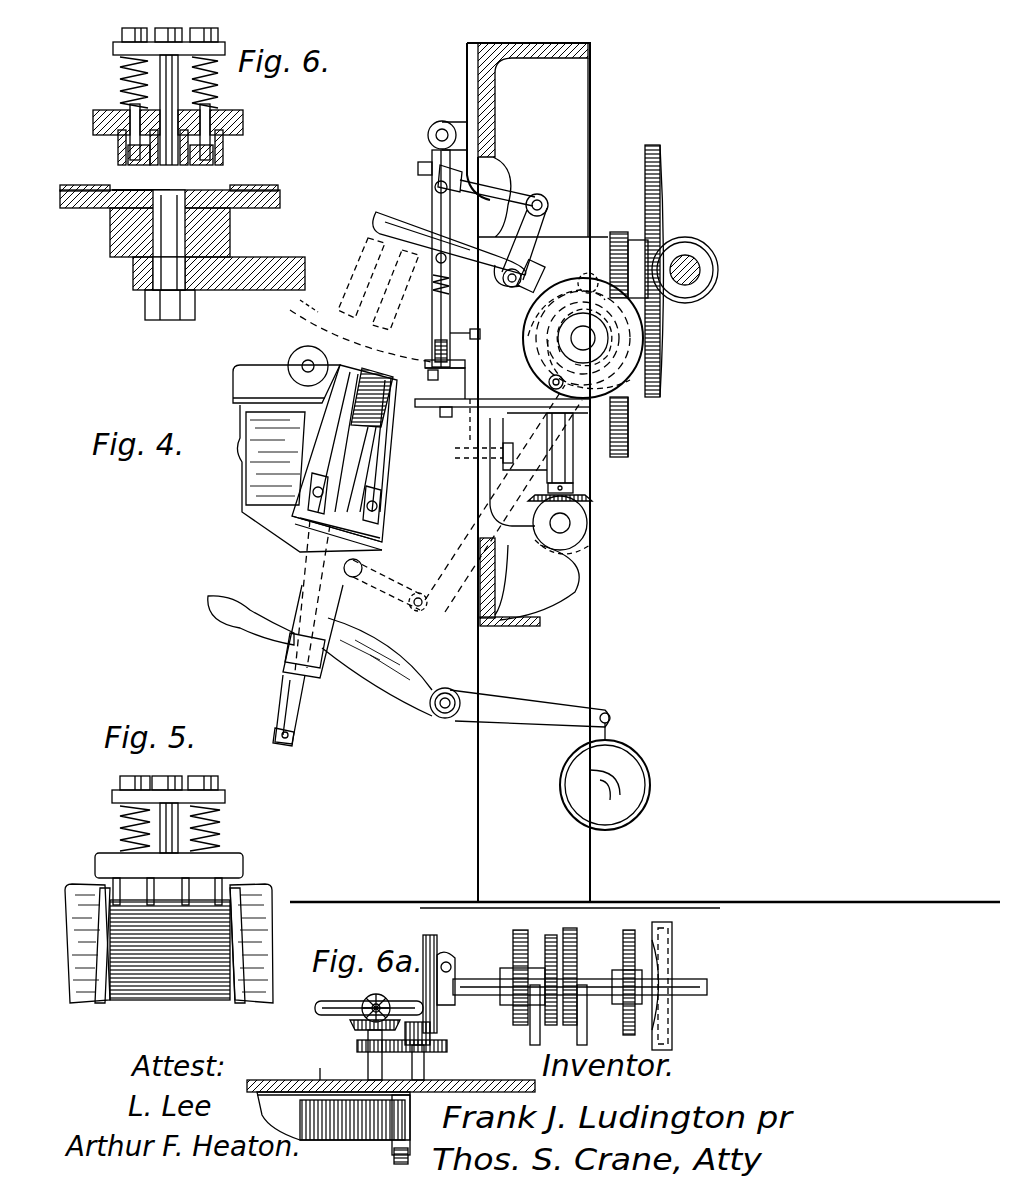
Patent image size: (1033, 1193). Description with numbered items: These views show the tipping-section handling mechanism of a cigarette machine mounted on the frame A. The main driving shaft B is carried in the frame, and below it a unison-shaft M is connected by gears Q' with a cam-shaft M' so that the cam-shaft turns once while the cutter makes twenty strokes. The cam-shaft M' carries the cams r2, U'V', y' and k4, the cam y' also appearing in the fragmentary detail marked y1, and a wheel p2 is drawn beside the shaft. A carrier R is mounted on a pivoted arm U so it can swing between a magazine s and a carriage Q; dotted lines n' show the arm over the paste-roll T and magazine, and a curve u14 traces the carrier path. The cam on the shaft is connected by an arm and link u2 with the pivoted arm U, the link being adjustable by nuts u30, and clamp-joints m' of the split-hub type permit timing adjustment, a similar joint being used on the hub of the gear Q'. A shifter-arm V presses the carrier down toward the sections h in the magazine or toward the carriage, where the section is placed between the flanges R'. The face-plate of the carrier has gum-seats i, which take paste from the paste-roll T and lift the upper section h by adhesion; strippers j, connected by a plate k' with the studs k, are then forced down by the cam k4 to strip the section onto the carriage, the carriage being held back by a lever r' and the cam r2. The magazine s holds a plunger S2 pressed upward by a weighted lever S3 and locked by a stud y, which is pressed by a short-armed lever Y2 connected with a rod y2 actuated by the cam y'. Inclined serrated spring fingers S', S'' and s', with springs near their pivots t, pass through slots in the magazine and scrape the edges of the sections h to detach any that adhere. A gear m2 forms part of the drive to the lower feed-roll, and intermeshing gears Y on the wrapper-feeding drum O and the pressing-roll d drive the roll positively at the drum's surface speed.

In FIG. 6, the plate k' is at (145, 37).
In FIG. 5, the plate k' is at (194, 789).
In FIG. 6, the spring bolts k is at (191, 110).
In FIG. 6, the strippers j is at (215, 160).
In FIG. 6, the gum-seats i is at (122, 162).
In FIG. 5, the gum-seats i is at (225, 885).
In FIG. 6, the sections of tipping material h is at (135, 192).
In FIG. 4, the sections of tipping material h is at (385, 357).
In FIG. 5, the sections of tipping material h is at (145, 990).
In FIG. 6, the flanges R' is at (183, 180).
In FIG. 4, the flanges R' is at (410, 337).
In FIG. 6, the carriage Q is at (137, 240).
In FIG. 4, the carriage Q is at (497, 401).
In FIG. 6, the base plate r' is at (219, 274).
In FIG. 4, the base plate r' is at (456, 428).
In FIG. 4, the pivoted arm U is at (414, 244).
In FIG. 4, the nuts u30 is at (425, 165).
In FIG. 4, the arm and link u2 is at (500, 190).
In FIG. 6A, the arm and link u2 is at (587, 1030).
In FIG. 4, the slip-joint m' is at (542, 243).
In FIG. 6A, the slip-joint m' is at (445, 972).
In FIG. 4, the gear m2 is at (508, 282).
In FIG. 4, the shifter-arm V is at (375, 221).
In FIG. 4, the dotted lines n' is at (378, 284).
In FIG. 4, the curve u14 is at (316, 307).
In FIG. 4, the cam-shaft M' is at (625, 335).
In FIG. 6A, the cam-shaft M' is at (603, 987).
In FIG. 4, the cam y' is at (562, 349).
In FIG. 4, the gear wheel p2 is at (657, 398).
In FIG. 4, the main driving shaft B is at (690, 265).
In FIG. 4, the gears Q' is at (571, 457).
In FIG. 6A, the gears Q' is at (417, 1028).
In FIG. 4, the unison-shaft M is at (587, 525).
In FIG. 6A, the unison-shaft M is at (361, 1019).
In FIG. 4, the rod y2 is at (503, 498).
In FIG. 4, the paste-roll T is at (296, 352).
In FIG. 4, the plunger S2 is at (378, 450).
In FIG. 4, the spring fingers S' is at (366, 482).
In FIG. 4, the side piece S'' is at (396, 498).
In FIG. 4, the pivot t is at (378, 508).
In FIG. 4, the stud y is at (375, 563).
In FIG. 4, the short-armed lever Y2 is at (389, 588).
In FIG. 4, the weighted lever S3 is at (380, 690).
In FIG. 5, the carrier R is at (186, 840).
In FIG. 5, the magazine s is at (184, 943).
In FIG. 5, the spring fingers s' is at (176, 945).
In FIG. 6A, the cam k4 is at (515, 952).
In FIG. 6A, the cam plate y1 is at (538, 1045).
In FIG. 6A, the cams U'V' is at (602, 981).
In FIG. 6A, the cam r2 is at (672, 935).
In FIG. 6A, the intermeshing gears Y is at (418, 1104).
In FIG. 6A, the frame A is at (535, 1086).
In FIG. 6A, the wrapper-feeding drum O is at (330, 1140).
In FIG. 6A, the pressing-roll d is at (410, 1145).